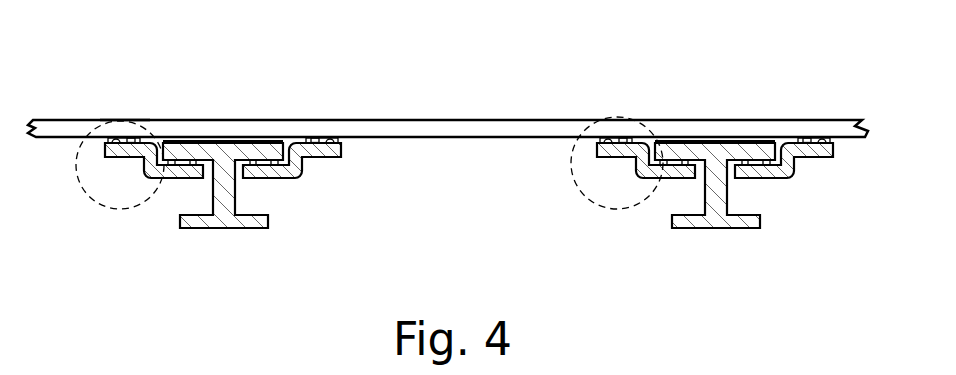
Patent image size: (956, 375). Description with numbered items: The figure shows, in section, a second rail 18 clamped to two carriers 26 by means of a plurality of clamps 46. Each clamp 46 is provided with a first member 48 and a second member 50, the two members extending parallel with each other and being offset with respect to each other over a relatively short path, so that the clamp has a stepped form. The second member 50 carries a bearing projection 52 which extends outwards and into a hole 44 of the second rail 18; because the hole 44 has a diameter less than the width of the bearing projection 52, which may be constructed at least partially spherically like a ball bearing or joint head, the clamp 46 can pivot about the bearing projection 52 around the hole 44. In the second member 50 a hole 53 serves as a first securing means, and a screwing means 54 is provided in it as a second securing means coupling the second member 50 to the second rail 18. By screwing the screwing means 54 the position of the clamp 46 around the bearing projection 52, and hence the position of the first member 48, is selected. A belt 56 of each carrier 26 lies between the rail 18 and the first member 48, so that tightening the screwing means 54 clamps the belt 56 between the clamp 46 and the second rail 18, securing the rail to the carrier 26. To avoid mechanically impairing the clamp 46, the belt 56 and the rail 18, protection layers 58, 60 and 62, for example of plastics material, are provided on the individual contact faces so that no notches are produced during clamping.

The second rail 18 is at (498, 120).
The carrier 26 is at (225, 212).
The hole 44 is at (123, 113).
The clamp 46 is at (308, 170).
The first member 48 is at (188, 143).
The second member 50 is at (121, 160).
The bearing projection 52 is at (115, 138).
The hole 53 is at (137, 158).
The screwing means 54 is at (138, 140).
The belt 56 is at (203, 144).
The protection layer 58 is at (184, 167).
The protection layer 60 is at (267, 168).
The protection layer 62 is at (253, 142).